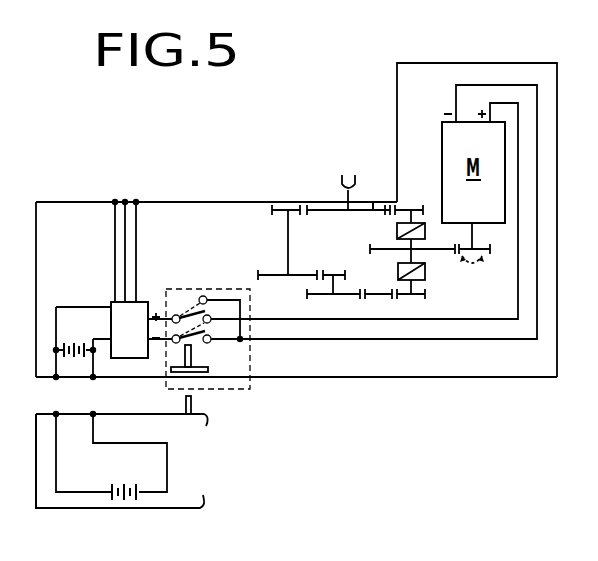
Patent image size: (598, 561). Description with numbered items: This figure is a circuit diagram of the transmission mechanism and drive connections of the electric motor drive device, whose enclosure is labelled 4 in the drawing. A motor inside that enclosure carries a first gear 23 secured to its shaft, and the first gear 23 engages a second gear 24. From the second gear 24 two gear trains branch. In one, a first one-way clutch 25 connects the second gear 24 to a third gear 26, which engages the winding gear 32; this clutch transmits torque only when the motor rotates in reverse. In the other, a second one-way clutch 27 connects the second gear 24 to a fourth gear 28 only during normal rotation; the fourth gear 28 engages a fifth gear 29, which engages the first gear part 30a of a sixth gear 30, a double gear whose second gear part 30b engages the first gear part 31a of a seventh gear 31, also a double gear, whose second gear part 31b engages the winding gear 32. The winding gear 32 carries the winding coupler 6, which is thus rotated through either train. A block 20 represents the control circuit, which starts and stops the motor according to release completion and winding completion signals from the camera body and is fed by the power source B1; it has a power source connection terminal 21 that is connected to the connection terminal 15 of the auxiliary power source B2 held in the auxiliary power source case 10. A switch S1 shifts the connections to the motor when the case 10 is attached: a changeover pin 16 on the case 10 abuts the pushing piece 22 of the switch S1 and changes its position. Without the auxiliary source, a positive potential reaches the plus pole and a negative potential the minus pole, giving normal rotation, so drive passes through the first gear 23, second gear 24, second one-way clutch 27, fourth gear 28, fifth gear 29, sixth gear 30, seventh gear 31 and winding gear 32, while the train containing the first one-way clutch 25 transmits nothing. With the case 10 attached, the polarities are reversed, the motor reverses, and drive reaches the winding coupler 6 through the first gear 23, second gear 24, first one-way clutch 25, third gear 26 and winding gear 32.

The motor drive unit housing 4 is at (476, 372).
The winding coupler 6 is at (358, 159).
The auxiliary power source case 10 is at (60, 500).
The connection terminal 15 is at (58, 414).
The changeover pin 16 is at (194, 405).
The control circuit 20 is at (148, 302).
The power source connection terminal 21 is at (62, 378).
The pushing piece 22 is at (194, 352).
The first gear 23 is at (487, 258).
The second gear 24 is at (377, 240).
The first one-way clutch 25 is at (427, 232).
The third gear 26 is at (402, 208).
The second one-way clutch 27 is at (427, 271).
The fourth gear 28 is at (414, 297).
The fifth gear 29 is at (380, 296).
The sixth gear 30 is at (338, 289).
The first gear part 30a is at (348, 296).
The second gear part 30b is at (343, 272).
The seventh gear 31 is at (293, 229).
The first gear part 31a is at (273, 278).
The second gear part 31b is at (272, 205).
The winding gear 32 is at (373, 202).
The battery B1 is at (66, 340).
The battery B2 is at (124, 500).
The switch S1 is at (211, 289).